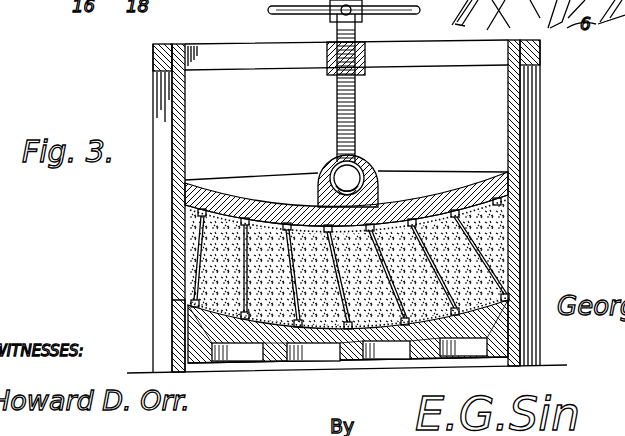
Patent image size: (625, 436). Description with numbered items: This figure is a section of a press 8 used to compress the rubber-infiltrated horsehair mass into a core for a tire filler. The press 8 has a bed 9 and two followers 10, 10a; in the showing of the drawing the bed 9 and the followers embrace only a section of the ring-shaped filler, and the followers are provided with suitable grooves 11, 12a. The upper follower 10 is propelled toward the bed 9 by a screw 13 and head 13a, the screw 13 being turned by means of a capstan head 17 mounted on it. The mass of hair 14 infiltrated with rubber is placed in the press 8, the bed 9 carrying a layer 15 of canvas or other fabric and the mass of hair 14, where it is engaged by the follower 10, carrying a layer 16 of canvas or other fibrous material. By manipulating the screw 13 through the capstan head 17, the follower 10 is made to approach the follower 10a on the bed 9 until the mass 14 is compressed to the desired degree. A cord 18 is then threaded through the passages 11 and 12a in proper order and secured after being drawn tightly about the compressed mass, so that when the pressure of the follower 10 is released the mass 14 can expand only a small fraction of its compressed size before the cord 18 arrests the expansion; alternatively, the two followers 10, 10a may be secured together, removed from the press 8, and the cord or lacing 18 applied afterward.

The press 8 is at (158, 232).
The bed 9 is at (322, 353).
The follower 10 is at (432, 202).
The follower 10a is at (505, 288).
The groove 11 is at (278, 350).
The upper pressure plate 12a is at (283, 205).
The screw 13 is at (356, 118).
The head 13a is at (475, 183).
The filter medium 14 is at (192, 275).
The layer of canvas 15 is at (178, 342).
The layer of canvas 16 is at (224, 206).
The capstan head 17 is at (334, 15).
The cord 18 is at (412, 222).